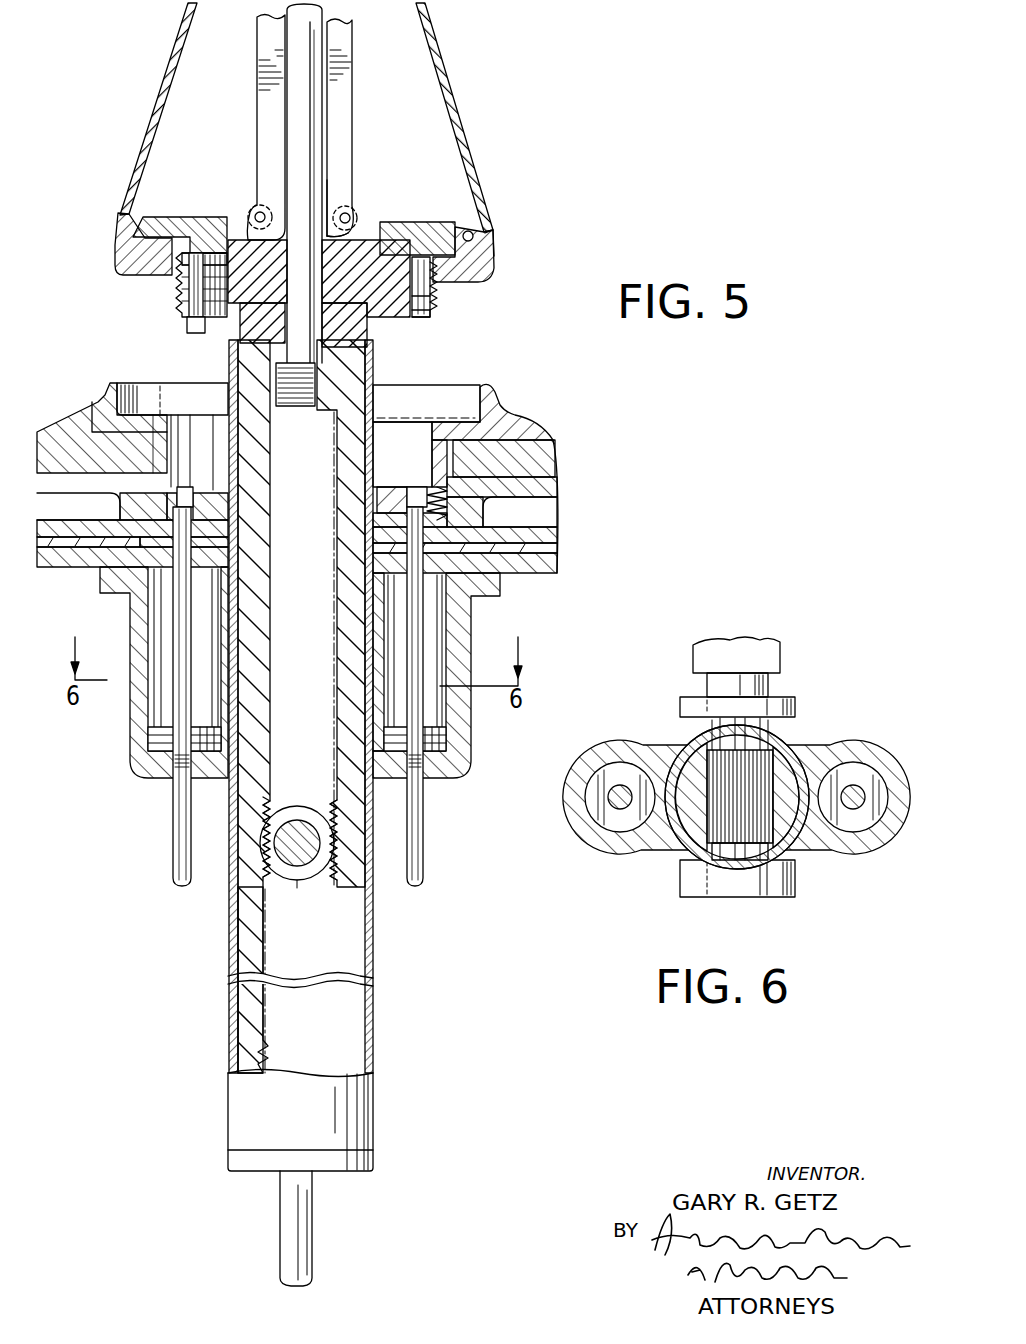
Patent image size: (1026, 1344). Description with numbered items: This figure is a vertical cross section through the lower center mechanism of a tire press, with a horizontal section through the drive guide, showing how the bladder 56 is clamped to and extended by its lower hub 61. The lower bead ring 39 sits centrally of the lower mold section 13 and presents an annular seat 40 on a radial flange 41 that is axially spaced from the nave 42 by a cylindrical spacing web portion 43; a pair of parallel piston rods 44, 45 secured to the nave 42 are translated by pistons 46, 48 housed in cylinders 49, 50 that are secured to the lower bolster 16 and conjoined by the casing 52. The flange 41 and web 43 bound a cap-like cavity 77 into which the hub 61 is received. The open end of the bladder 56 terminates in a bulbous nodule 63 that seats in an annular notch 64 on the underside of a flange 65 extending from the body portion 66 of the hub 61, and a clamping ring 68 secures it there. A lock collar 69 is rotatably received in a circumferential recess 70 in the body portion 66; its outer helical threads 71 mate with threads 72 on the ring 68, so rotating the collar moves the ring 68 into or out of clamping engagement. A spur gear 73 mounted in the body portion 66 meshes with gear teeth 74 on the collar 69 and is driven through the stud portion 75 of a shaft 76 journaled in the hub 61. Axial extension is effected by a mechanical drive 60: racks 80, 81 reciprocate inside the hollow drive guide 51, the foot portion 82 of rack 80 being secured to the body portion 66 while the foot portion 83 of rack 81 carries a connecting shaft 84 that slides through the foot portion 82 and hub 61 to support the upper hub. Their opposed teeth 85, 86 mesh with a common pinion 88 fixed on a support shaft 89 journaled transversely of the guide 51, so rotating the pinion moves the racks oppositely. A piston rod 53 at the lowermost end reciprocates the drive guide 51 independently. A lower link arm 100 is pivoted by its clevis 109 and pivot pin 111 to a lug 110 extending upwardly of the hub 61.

In FIG. 5, the lower link arm 100 is at (349, 48).
In FIG. 5, the bladder 56 is at (446, 53).
In FIG. 5, the connecting shaft 84 is at (294, 121).
In FIG. 5, the clevis 109 is at (337, 200).
In FIG. 5, the lug 110 is at (338, 235).
In FIG. 5, the pivot pin 111 is at (349, 216).
In FIG. 5, the hub 61 is at (402, 219).
In FIG. 5, the threads 72 is at (429, 262).
In FIG. 5, the flange 65 is at (462, 224).
In FIG. 5, the annular notch 64 is at (483, 240).
In FIG. 5, the clamping ring 68 is at (473, 267).
In FIG. 5, the helical threads 71 is at (438, 283).
In FIG. 5, the lock collar 69 is at (438, 300).
In FIG. 5, the circumferential recess 70 is at (424, 308).
In FIG. 5, the gear teeth 74 is at (191, 240).
In FIG. 5, the bulbous nodule 63 is at (140, 240).
In FIG. 5, the shaft 76 is at (192, 268).
In FIG. 5, the spur gear 73 is at (192, 292).
In FIG. 5, the stud portion 75 is at (194, 330).
In FIG. 5, the body portion 66 is at (273, 293).
In FIG. 5, the foot portion 82 is at (358, 333).
In FIG. 5, the foot portion 83 is at (281, 407).
In FIG. 5, the cap-like cavity 77 is at (404, 433).
In FIG. 5, the lower bead ring 39 is at (475, 384).
In FIG. 5, the annular seat 40 is at (460, 432).
In FIG. 5, the radial flange 41 is at (485, 440).
In FIG. 5, the spacing web portion 43 is at (436, 453).
In FIG. 5, the lower mold section 13 is at (547, 463).
In FIG. 5, the lower bolster 16 is at (545, 571).
In FIG. 5, the nave 42 is at (216, 487).
In FIG. 5, the piston rod 44 is at (179, 619).
In FIG. 6, the piston rod 44 is at (614, 791).
In FIG. 5, the cylinder 49 is at (133, 655).
In FIG. 6, the cylinder 49 is at (578, 806).
In FIG. 5, the rack 80 is at (266, 626).
In FIG. 6, the rack 80 is at (690, 815).
In FIG. 5, the rack 81 is at (346, 668).
In FIG. 6, the rack 81 is at (799, 817).
In FIG. 5, the piston rod 45 is at (417, 629).
In FIG. 6, the piston rod 45 is at (858, 805).
In FIG. 5, the cylinder 50 is at (473, 667).
In FIG. 6, the cylinder 50 is at (858, 748).
In FIG. 5, the piston 46 is at (158, 738).
In FIG. 5, the piston 48 is at (446, 745).
In FIG. 5, the teeth 85 is at (268, 800).
In FIG. 5, the pinion 88 is at (281, 820).
In FIG. 6, the pinion 88 is at (712, 768).
In FIG. 5, the drive guide 51 is at (230, 902).
In FIG. 6, the drive guide 51 is at (792, 757).
In FIG. 5, the support shaft 89 is at (297, 864).
In FIG. 6, the support shaft 89 is at (748, 856).
In FIG. 5, the teeth 86 is at (324, 880).
In FIG. 5, the mechanical drive 60 is at (343, 921).
In FIG. 5, the piston rod 53 is at (287, 1232).
In FIG. 6, the casing 52 is at (698, 867).